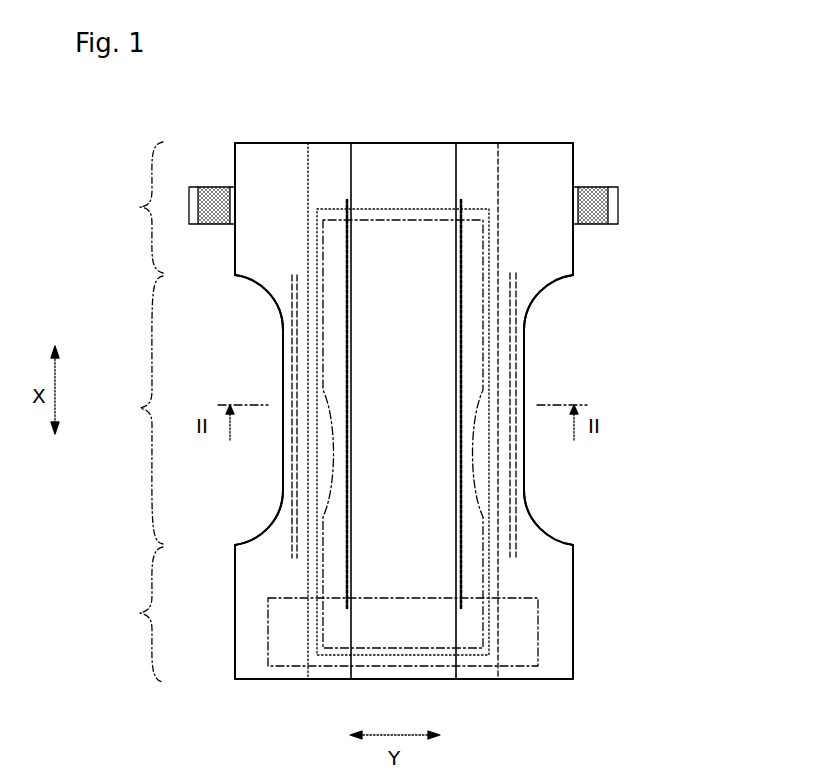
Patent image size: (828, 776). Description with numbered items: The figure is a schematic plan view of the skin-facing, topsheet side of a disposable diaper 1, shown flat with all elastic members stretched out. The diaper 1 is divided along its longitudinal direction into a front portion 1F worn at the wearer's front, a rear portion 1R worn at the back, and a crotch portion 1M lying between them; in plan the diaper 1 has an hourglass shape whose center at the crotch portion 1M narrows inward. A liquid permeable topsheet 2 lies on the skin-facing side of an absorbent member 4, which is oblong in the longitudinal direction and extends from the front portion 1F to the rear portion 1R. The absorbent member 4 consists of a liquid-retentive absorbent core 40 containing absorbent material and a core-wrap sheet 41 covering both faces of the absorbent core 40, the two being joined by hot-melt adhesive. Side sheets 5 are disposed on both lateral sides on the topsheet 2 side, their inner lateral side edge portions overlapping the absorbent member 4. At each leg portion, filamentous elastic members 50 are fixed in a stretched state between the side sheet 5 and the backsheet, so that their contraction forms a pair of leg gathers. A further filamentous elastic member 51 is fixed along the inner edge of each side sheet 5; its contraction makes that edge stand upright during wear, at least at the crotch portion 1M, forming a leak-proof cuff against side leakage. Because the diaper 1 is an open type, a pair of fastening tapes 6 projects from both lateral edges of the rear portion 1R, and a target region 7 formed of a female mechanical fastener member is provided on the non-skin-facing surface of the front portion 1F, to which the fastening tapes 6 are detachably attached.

The disposable diaper 1 is at (560, 116).
The topsheet 2 is at (400, 185).
The absorbent member 4 is at (513, 432).
The absorbent core 40 is at (483, 258).
The core-wrap sheet 41 is at (490, 290).
The side sheet 5 is at (270, 264).
The elastic members 50 is at (290, 478).
The elastic member 51 is at (460, 353).
The fastening tape 6 is at (212, 185).
The target region 7 is at (538, 628).
The rear portion 1R is at (130, 207).
The crotch portion 1M is at (131, 410).
The front portion 1F is at (132, 614).